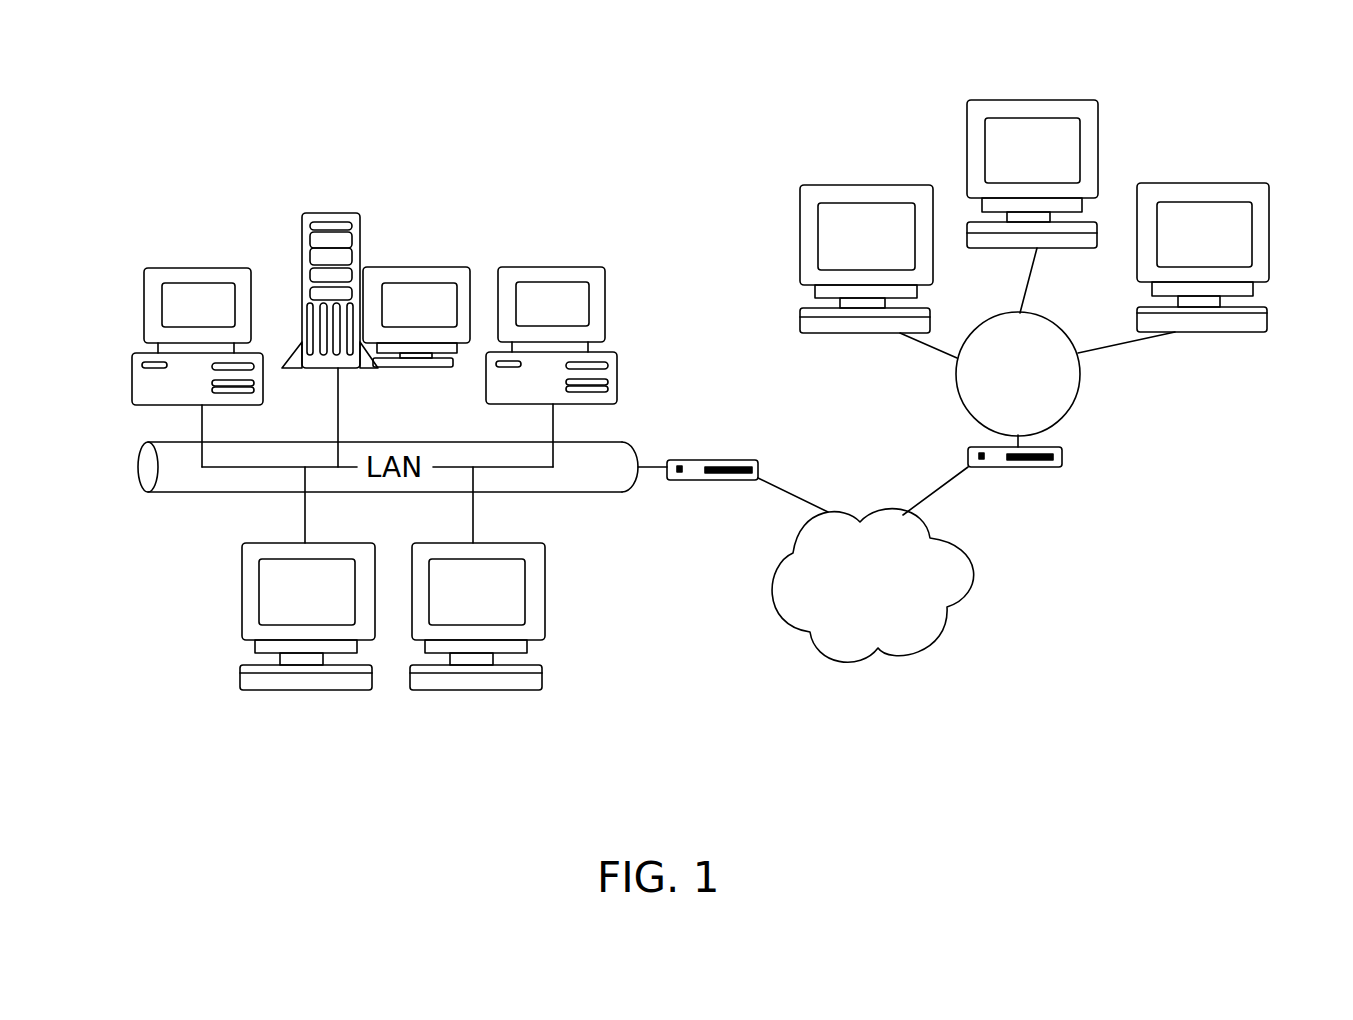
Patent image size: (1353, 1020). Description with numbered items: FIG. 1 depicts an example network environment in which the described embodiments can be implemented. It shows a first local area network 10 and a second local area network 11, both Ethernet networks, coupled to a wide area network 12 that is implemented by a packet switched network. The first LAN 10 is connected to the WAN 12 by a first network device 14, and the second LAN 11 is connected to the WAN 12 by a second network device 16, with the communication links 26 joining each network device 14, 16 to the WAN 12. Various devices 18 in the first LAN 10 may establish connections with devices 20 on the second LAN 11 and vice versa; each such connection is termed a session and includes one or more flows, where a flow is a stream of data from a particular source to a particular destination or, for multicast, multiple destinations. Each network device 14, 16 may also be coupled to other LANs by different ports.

The first local area network 10 is at (238, 134).
The second local area network 11 is at (937, 386).
The wide area network 12 is at (845, 662).
The first network device 14 is at (705, 458).
The second network device 16 is at (1045, 445).
The devices 18 is at (175, 268).
The devices 20 is at (843, 185).
The communication link 26 is at (797, 495).